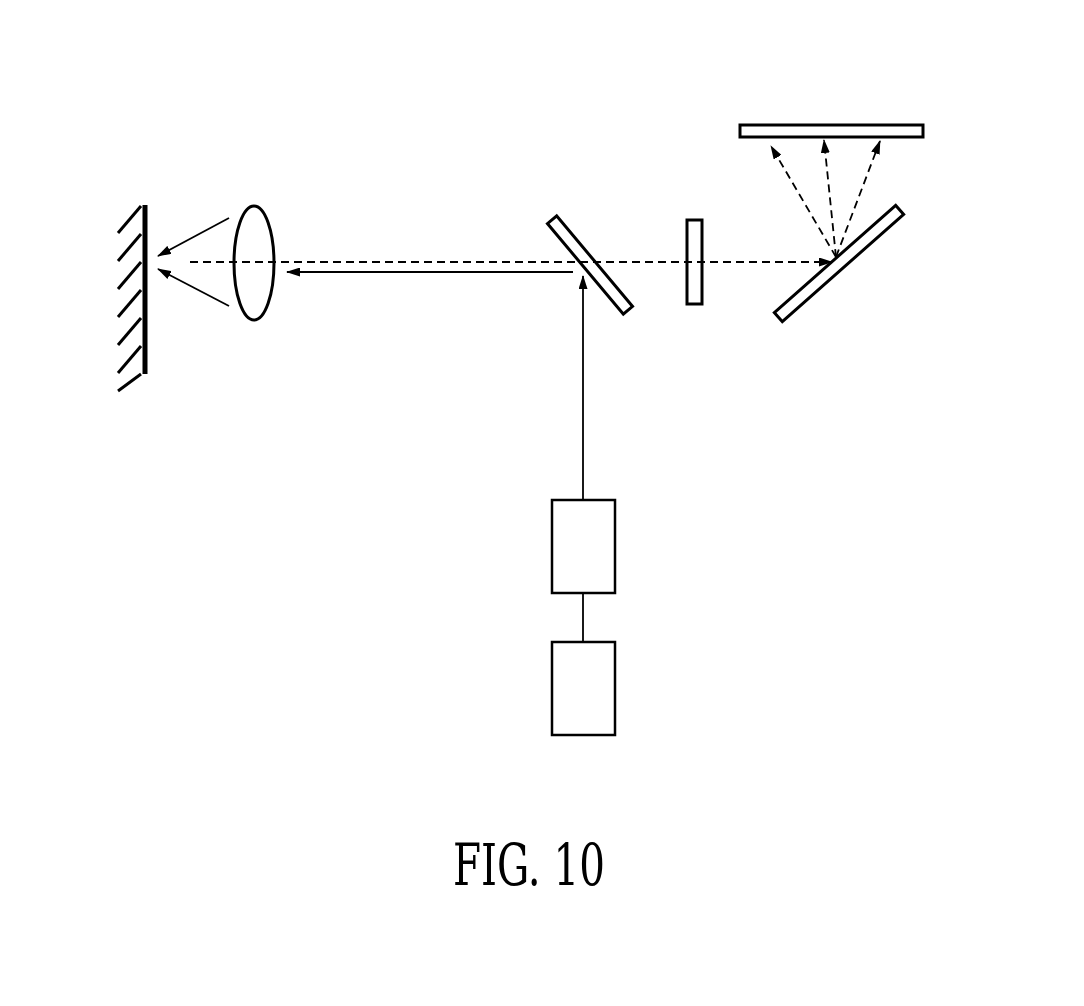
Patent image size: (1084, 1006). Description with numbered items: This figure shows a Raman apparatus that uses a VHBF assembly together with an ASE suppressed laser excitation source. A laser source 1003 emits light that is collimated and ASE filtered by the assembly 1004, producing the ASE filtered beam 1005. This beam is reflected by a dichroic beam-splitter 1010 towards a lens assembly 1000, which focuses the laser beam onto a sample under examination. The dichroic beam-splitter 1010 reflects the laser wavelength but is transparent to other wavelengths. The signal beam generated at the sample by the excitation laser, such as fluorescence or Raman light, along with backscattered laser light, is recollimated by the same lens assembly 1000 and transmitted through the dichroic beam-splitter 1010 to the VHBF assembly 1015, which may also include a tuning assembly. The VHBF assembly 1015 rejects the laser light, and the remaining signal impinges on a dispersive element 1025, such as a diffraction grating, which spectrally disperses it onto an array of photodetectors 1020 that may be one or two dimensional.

The lens assembly 1000 is at (256, 321).
The laser source 1003 is at (552, 690).
The assembly 1004 is at (552, 560).
The ASE filtered beam 1005 is at (583, 405).
The dichroic beam-splitter 1010 is at (559, 221).
The VHBF assembly 1015 is at (691, 220).
The array of photodetectors 1020 is at (788, 125).
The dispersive element 1025 is at (807, 307).